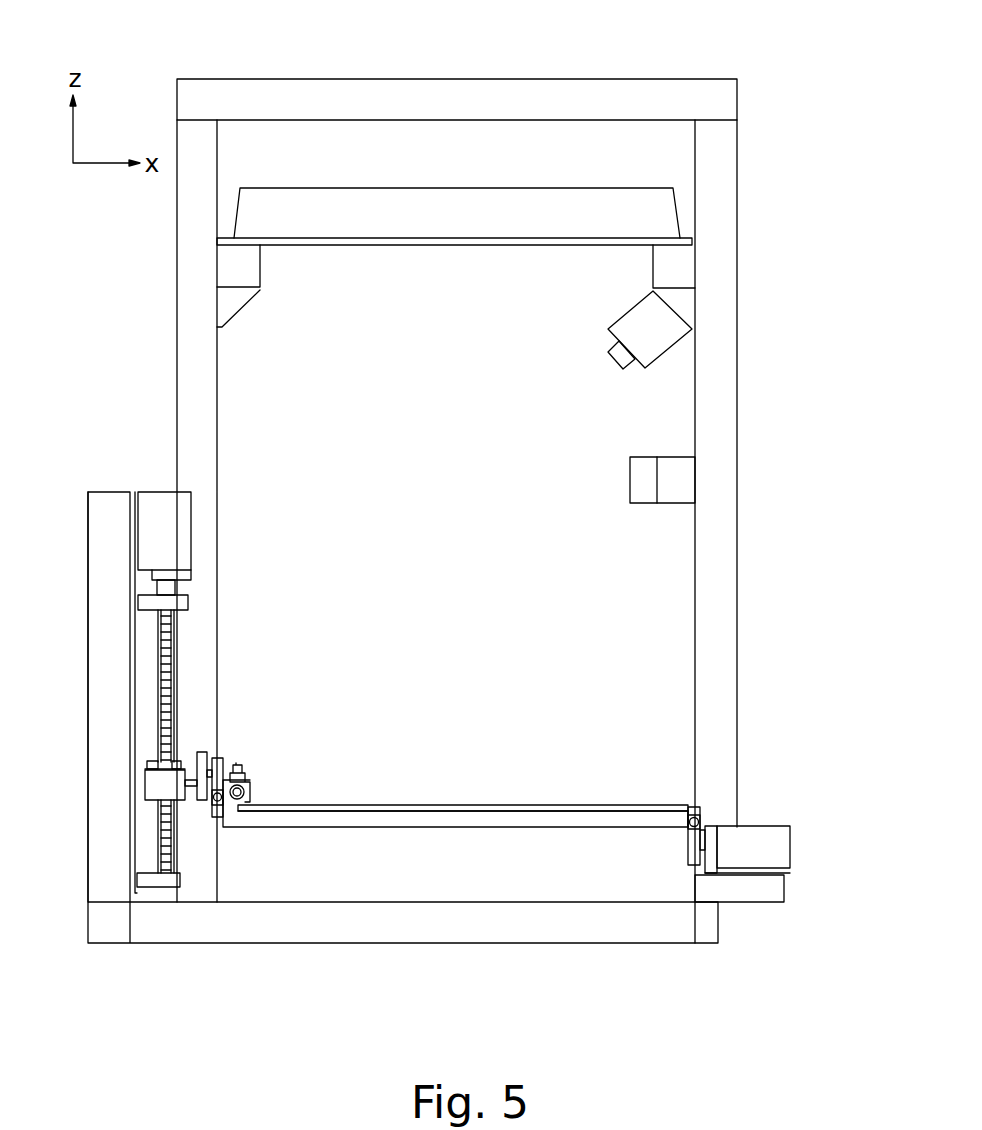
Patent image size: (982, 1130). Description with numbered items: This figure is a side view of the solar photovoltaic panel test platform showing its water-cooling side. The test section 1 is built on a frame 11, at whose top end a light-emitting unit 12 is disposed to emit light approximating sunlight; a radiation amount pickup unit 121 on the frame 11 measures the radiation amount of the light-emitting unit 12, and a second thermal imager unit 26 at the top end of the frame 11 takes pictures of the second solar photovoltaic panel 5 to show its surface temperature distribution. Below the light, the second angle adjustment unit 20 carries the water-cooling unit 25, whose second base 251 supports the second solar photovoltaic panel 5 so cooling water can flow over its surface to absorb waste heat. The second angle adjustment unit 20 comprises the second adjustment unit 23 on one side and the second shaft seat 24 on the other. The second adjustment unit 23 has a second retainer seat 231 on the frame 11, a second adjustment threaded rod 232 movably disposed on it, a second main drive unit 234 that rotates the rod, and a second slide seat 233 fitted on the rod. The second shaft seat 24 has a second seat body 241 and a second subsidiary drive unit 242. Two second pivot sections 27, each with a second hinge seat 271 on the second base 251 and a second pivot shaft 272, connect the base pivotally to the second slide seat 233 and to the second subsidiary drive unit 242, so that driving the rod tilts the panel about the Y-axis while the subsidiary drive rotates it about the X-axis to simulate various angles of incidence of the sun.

The test section 1 is at (397, 79).
The frame 11 is at (565, 97).
The light-emitting unit 12 is at (337, 198).
The radiation amount pickup unit 121 is at (630, 480).
The second thermal imager unit 26 is at (633, 320).
The second solar photovoltaic panel 5 is at (463, 805).
The second angle adjustment unit 20 is at (372, 828).
The water-cooling unit 25 is at (483, 828).
The second base 251 is at (588, 828).
The second adjustment unit 23 is at (198, 580).
The second main drive unit 234 is at (158, 505).
The second adjustment threaded rod 232 is at (163, 643).
The second retainer seat 231 is at (118, 688).
The second slide seat 233 is at (160, 792).
The second pivot section 27 is at (210, 826).
The second hinge seat 271 is at (218, 760).
The second pivot shaft 272 is at (207, 757).
The second shaft seat 24 is at (795, 875).
The second subsidiary drive unit 242 is at (783, 847).
The second seat body 241 is at (763, 893).